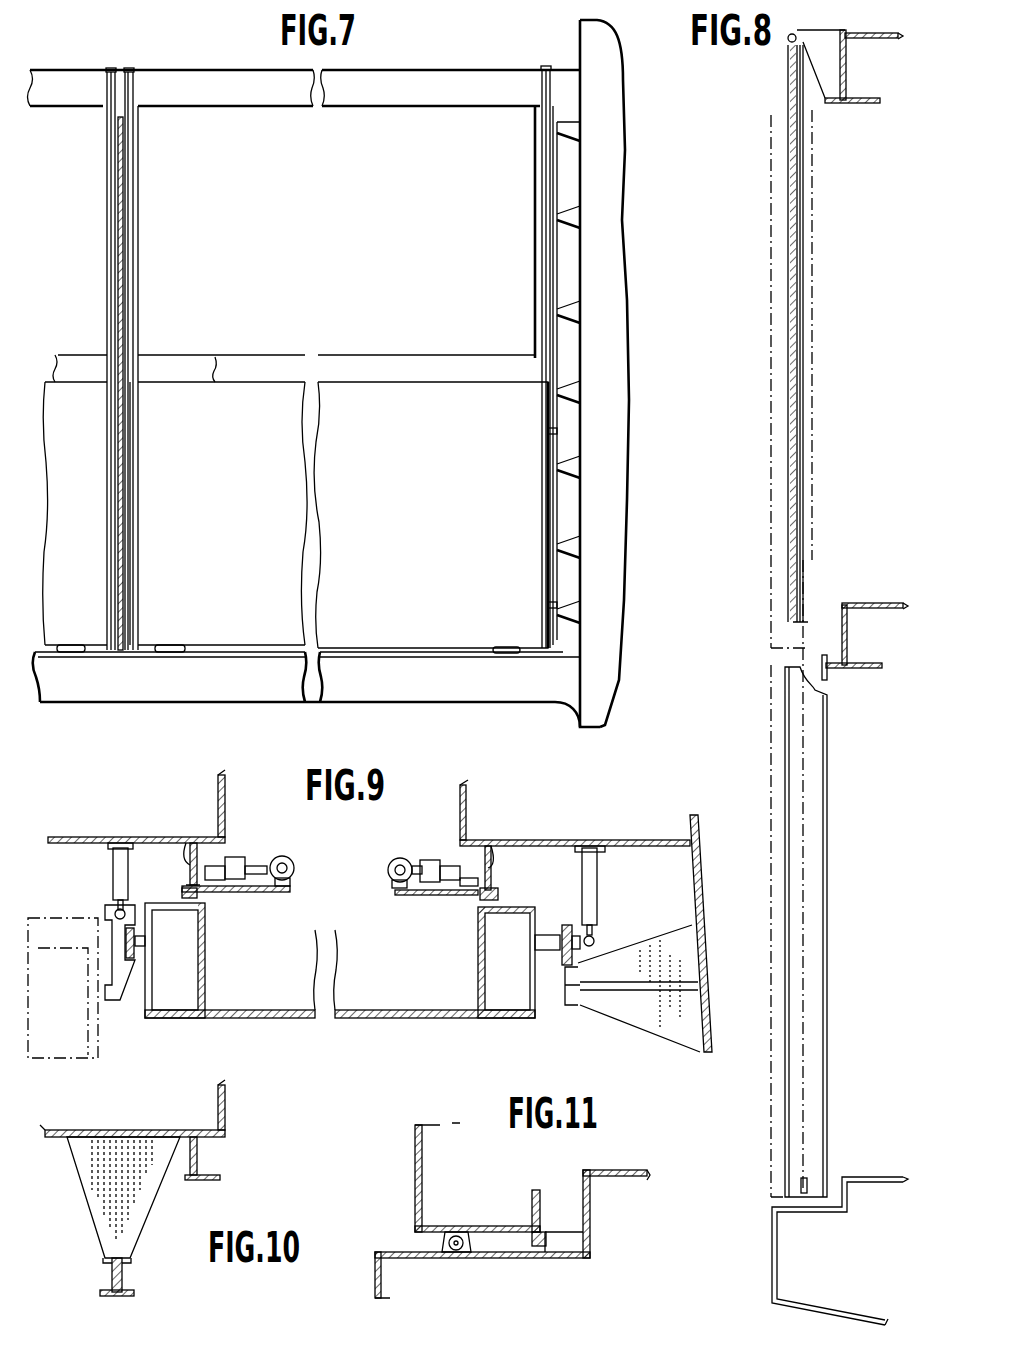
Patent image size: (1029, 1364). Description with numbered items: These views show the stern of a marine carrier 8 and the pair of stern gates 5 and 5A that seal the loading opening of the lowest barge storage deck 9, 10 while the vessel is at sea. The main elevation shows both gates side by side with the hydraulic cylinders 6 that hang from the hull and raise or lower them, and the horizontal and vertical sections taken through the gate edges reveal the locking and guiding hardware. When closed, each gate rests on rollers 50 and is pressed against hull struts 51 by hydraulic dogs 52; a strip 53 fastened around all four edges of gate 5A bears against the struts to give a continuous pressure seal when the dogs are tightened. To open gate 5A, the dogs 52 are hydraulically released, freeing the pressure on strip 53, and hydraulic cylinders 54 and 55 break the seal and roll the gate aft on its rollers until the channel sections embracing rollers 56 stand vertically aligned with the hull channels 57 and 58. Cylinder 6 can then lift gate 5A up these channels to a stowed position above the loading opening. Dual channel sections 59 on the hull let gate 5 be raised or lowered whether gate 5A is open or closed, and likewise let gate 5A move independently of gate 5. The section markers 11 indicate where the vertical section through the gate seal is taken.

In FIG. 7, the stern gate 5 is at (66, 357).
In FIG. 9, the stern gate 5 is at (90, 1060).
In FIG. 7, the stern gate 5A is at (215, 357).
In FIG. 8, the stern gate 5A is at (785, 720).
In FIG. 9, the stern gate 5A is at (425, 1018).
In FIG. 11, the stern gate 5A is at (415, 1183).
In FIG. 7, the hydraulic cylinder 6 is at (132, 82).
In FIG. 8, the hydraulic cylinder 6 is at (790, 168).
In FIG. 7, the carrier 8 is at (552, 62).
In FIG. 9, the carrier 8 is at (82, 837).
In FIG. 10, the carrier 8 is at (147, 1133).
In FIG. 11, the carrier 8 is at (612, 1170).
In FIG. 7, the storage deck 9 is at (172, 425).
In FIG. 8, the storage deck 9 is at (876, 1177).
In FIG. 7, the storage deck 10 is at (432, 360).
In FIG. 8, the storage deck 10 is at (881, 604).
In FIG. 7, the top bracket (section line 11) 11 is at (522, 652).
In FIG. 8, the top bracket (section line 11) 11 is at (880, 35).
In FIG. 7, the roller 50 is at (158, 655).
In FIG. 11, the roller 50 is at (470, 1254).
In FIG. 9, the hull strut 51 is at (190, 845).
In FIG. 10, the hull strut 51 is at (200, 1162).
In FIG. 11, the hull strut 51 is at (560, 1245).
In FIG. 9, the hydraulic dog 52 is at (240, 858).
In FIG. 9, the strip 53 is at (498, 893).
In FIG. 11, the strip 53 is at (540, 1226).
In FIG. 9, the hydraulic cylinder 54 is at (113, 866).
In FIG. 9, the hydraulic cylinder 55 is at (597, 896).
In FIG. 9, the roller 56 is at (134, 951).
In FIG. 10, the channel 57 is at (128, 1278).
In FIG. 9, the channel 58 is at (570, 1005).
In FIG. 9, the dual channel section 59 is at (105, 975).